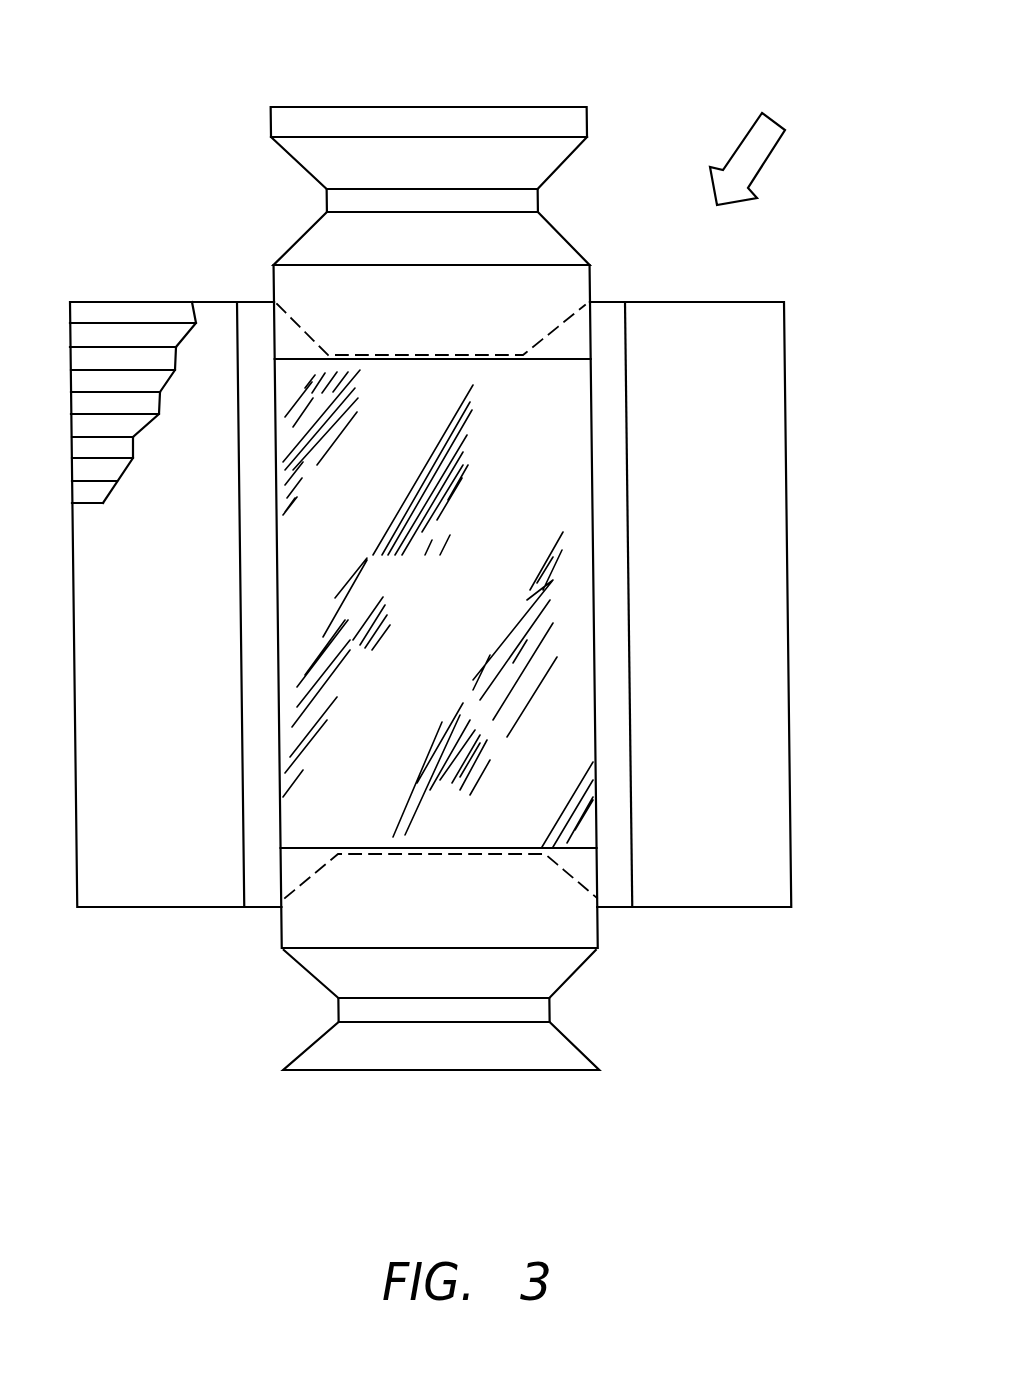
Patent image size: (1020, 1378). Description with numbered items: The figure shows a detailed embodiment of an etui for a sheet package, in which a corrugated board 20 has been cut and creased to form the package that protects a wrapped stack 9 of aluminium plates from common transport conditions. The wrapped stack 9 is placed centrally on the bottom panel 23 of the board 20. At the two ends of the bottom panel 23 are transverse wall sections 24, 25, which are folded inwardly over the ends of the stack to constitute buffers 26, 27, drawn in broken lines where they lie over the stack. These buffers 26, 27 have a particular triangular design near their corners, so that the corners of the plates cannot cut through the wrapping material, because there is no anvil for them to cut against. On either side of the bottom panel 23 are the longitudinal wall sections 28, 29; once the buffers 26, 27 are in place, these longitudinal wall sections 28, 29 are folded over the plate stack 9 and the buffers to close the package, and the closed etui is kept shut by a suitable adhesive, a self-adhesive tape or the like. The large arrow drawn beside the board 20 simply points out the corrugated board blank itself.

The wrapped stack of aluminium plates 9 is at (472, 639).
The corrugated board 20 is at (753, 158).
The bottom panel 23 is at (292, 883).
The transverse wall section 24 is at (422, 106).
The transverse wall section 25 is at (440, 1072).
The buffer 26 is at (503, 352).
The buffer 27 is at (577, 953).
The longitudinal wall section 28 is at (115, 301).
The longitudinal wall section 29 is at (787, 452).